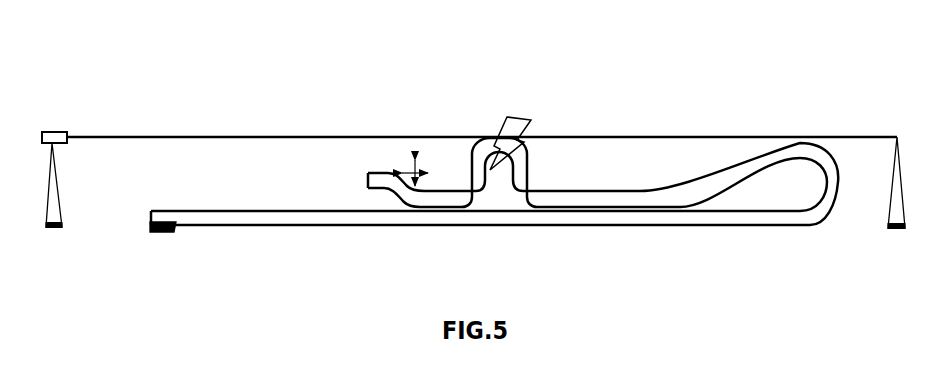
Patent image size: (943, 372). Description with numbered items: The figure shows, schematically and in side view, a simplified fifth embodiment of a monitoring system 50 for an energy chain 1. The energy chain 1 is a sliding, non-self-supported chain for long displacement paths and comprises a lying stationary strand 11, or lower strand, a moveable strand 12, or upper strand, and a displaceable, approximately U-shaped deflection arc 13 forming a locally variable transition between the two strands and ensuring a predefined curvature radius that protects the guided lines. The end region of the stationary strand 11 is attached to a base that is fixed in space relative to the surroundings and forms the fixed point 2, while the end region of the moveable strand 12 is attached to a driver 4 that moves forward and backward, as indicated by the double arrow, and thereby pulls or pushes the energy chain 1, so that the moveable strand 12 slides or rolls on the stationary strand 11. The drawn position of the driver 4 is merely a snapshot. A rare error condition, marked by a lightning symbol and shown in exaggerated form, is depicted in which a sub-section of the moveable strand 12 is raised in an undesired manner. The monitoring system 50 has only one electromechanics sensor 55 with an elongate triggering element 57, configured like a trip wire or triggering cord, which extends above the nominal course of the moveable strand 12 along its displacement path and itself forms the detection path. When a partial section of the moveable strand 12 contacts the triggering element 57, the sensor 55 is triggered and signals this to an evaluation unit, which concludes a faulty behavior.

The monitoring system 50 is at (138, 50).
The electromechanics sensor 55 is at (52, 131).
The triggering element 57 is at (225, 134).
The driver 4 is at (375, 163).
The moveable strand 12 is at (577, 181).
The deflection arc 13 is at (766, 157).
The energy chain 1 is at (375, 219).
The stationary strand 11 is at (293, 229).
The fixed point 2 is at (170, 230).